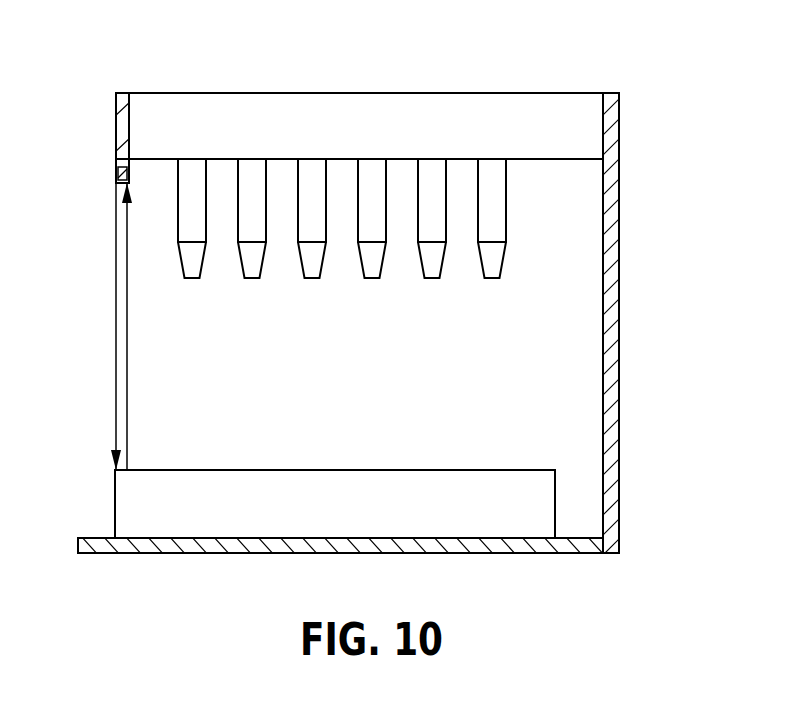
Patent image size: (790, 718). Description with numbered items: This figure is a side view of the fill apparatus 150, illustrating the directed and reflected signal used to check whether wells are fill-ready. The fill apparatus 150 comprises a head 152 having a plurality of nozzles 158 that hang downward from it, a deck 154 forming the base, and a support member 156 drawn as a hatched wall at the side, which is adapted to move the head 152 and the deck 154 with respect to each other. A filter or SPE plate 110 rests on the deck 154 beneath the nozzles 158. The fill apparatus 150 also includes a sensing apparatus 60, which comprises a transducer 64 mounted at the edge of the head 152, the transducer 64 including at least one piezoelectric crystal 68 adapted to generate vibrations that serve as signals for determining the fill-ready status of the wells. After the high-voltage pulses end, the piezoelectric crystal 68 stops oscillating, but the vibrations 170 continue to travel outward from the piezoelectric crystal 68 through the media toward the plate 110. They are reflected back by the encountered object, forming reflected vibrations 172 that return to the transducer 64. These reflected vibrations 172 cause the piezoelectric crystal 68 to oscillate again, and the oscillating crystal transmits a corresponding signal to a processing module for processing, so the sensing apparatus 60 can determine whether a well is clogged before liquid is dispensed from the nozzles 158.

The sensing apparatus 60 is at (128, 70).
The transducer 64 is at (116, 103).
The piezoelectric crystal 68 is at (116, 173).
The filter or SPE plate 110 is at (363, 519).
The fill apparatus 150 is at (379, 52).
The head 152 is at (386, 142).
The deck 154 is at (482, 553).
The support member 156 is at (619, 302).
The nozzles 158 is at (325, 245).
The vibrations 170 is at (116, 359).
The reflected vibrations 172 is at (127, 358).